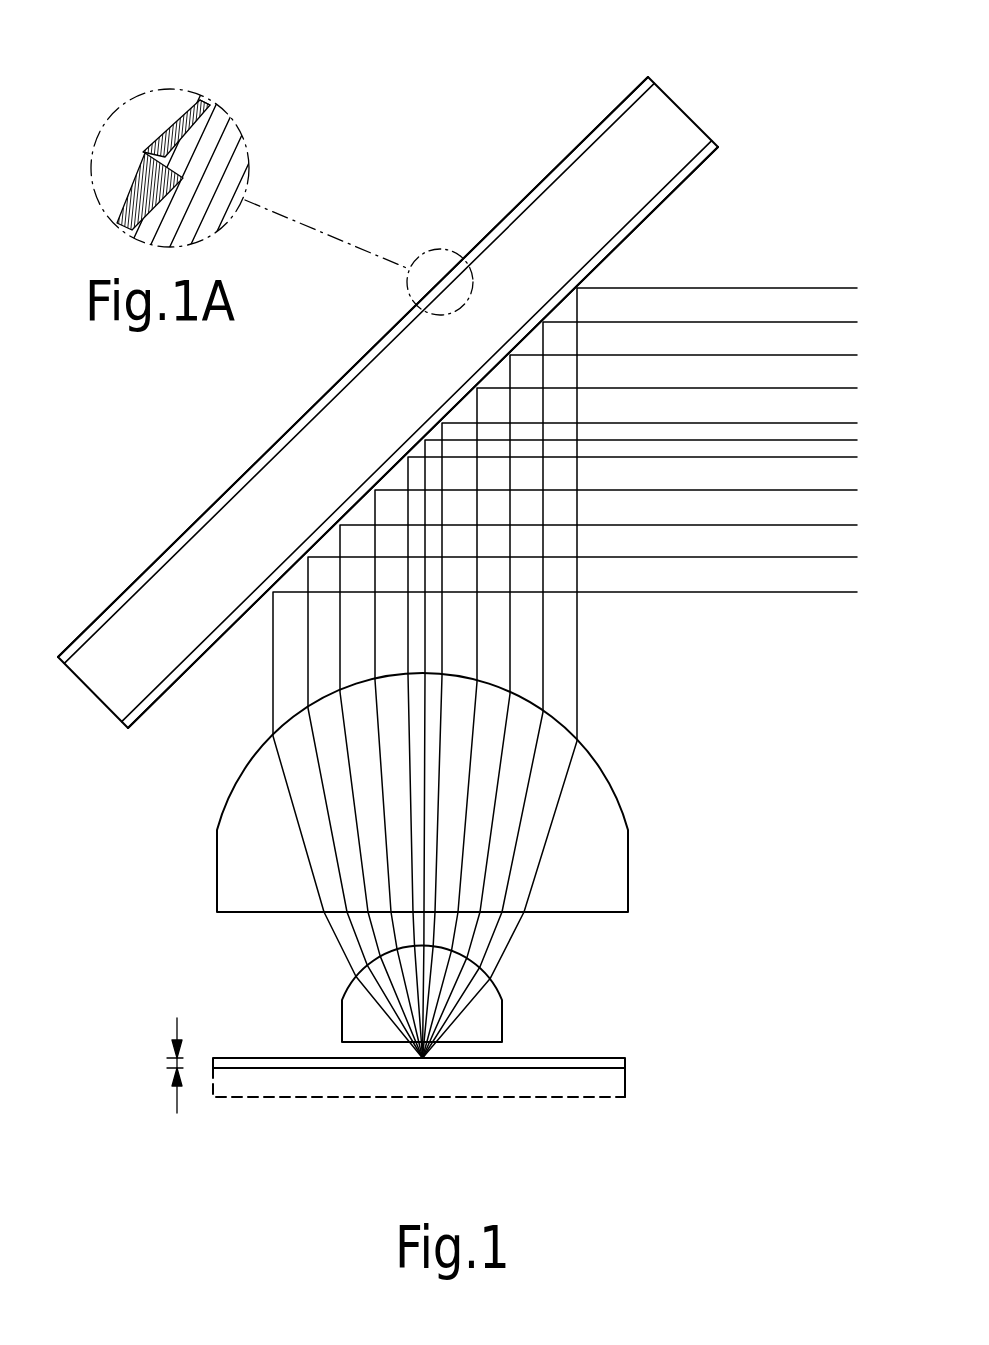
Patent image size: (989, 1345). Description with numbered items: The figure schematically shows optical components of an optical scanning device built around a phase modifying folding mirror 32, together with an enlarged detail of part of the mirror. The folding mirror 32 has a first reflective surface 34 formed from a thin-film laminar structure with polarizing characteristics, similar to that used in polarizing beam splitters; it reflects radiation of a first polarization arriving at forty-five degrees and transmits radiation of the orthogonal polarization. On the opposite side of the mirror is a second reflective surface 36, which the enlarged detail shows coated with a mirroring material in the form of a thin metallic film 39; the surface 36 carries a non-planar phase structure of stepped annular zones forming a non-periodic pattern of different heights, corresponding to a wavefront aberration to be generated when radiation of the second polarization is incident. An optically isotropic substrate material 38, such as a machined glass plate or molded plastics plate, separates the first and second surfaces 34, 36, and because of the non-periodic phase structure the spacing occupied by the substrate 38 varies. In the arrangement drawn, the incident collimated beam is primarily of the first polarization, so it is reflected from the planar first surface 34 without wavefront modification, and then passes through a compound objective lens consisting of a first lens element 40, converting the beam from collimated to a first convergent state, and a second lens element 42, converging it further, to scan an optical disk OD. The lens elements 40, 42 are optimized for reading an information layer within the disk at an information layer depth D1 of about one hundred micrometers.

In FIG. 1, the phase modifying folding mirror 32 is at (707, 128).
In FIG. 1, the first reflective surface 34 is at (695, 173).
In FIG. 1A, the second reflective surface 36 is at (155, 138).
In FIG. 1, the second reflective surface 36 is at (600, 128).
In FIG. 1A, the optically isotropic substrate material 38 is at (235, 165).
In FIG. 1, the optically isotropic substrate material 38 is at (587, 225).
In FIG. 1A, the thin metallic film 39 is at (205, 97).
In FIG. 1, the first lens element 40 is at (630, 876).
In FIG. 1, the second lens element 42 is at (503, 1022).
In FIG. 1, the optical disk OD is at (625, 1085).
In FIG. 1, the information layer depth D1 is at (151, 1065).